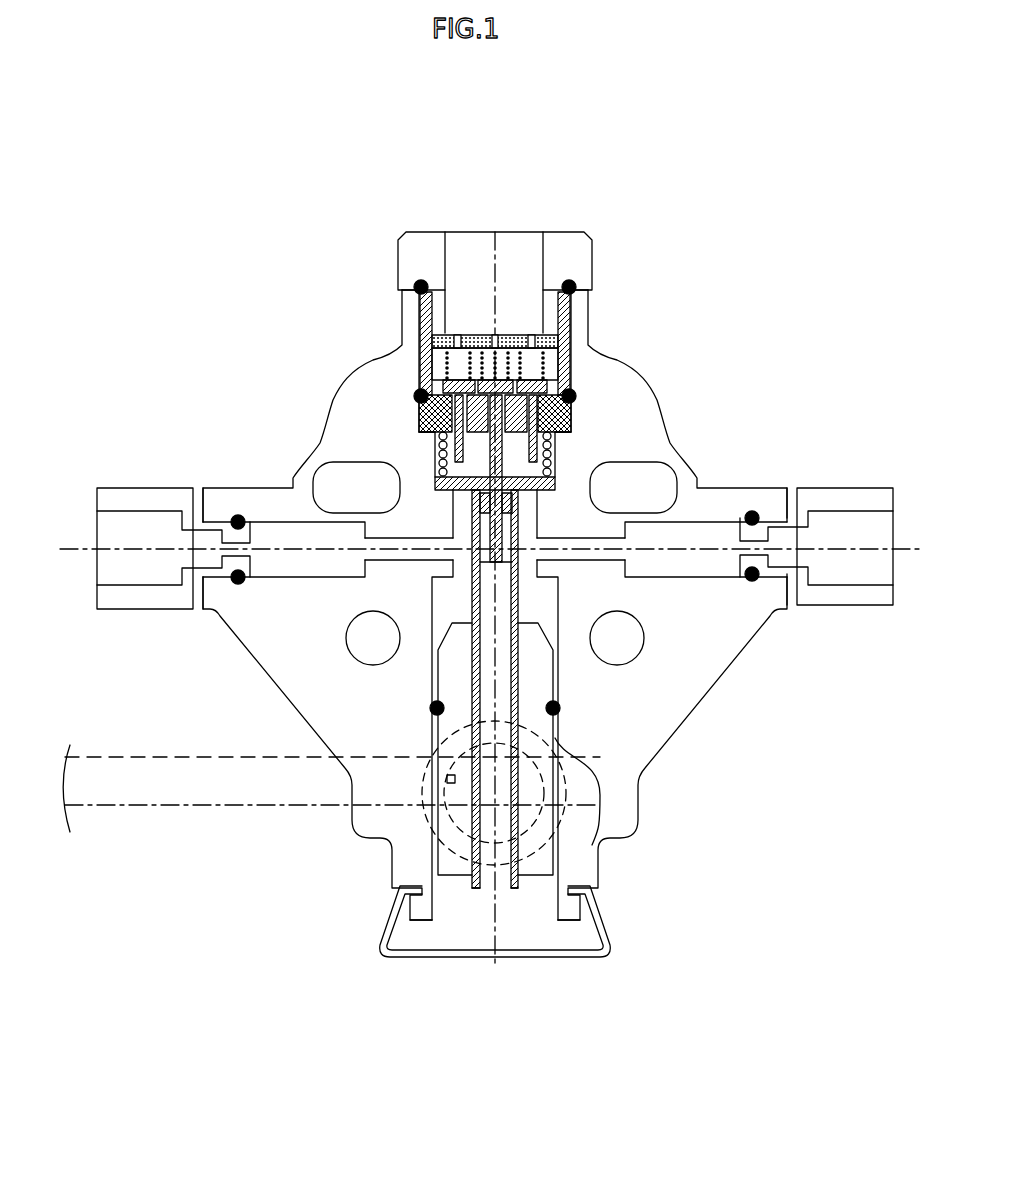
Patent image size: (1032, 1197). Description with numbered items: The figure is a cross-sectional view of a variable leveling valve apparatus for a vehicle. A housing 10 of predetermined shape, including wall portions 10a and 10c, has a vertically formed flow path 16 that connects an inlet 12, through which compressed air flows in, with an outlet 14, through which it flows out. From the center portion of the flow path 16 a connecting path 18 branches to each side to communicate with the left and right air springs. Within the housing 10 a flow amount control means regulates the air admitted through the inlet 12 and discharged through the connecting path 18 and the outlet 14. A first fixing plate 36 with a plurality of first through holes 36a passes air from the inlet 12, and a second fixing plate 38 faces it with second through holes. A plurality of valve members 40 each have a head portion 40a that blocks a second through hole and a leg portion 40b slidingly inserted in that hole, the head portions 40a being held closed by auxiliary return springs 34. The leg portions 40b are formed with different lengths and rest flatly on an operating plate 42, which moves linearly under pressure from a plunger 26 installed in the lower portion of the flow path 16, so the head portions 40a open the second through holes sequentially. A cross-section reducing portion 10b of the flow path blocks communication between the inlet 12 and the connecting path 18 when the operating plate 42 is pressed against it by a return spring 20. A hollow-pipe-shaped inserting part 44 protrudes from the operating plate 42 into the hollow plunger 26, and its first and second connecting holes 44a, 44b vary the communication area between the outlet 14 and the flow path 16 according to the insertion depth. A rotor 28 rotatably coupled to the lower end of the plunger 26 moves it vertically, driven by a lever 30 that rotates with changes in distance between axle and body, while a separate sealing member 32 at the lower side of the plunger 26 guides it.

The housing 10 is at (653, 393).
The upper housing wall 10a is at (570, 298).
The cross-section reducing portion 10b is at (570, 490).
The housing wall 10c is at (572, 350).
The inlet 12 is at (497, 330).
The outlet 14 is at (523, 933).
The flow path 16 is at (560, 450).
The connecting path 18 is at (700, 566).
The return spring 20 is at (440, 468).
The plunger 26 is at (512, 687).
The rotor 28 is at (537, 822).
The lever 30 is at (230, 795).
The sealing member 32 is at (437, 708).
The auxiliary return springs 34 is at (432, 352).
The first fixing plate 36 is at (524, 269).
The first through holes 36a is at (457, 334).
The second fixing plate 38 is at (570, 397).
The valve members 40 is at (375, 385).
The head portion 40a is at (430, 384).
The leg portion 40b is at (425, 412).
The operating plate 42 is at (435, 487).
The inserting part 44 is at (478, 540).
The first connecting hole 44a is at (487, 503).
The second connecting hole 44b is at (483, 515).